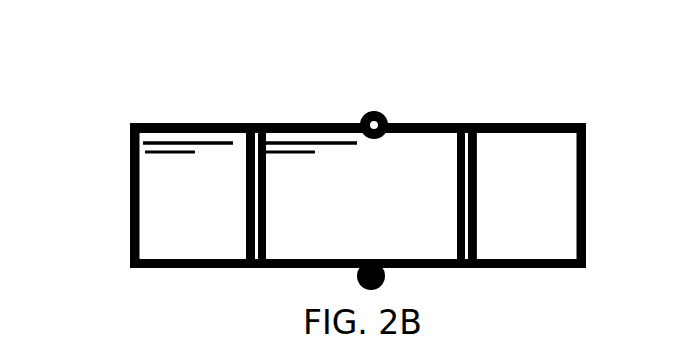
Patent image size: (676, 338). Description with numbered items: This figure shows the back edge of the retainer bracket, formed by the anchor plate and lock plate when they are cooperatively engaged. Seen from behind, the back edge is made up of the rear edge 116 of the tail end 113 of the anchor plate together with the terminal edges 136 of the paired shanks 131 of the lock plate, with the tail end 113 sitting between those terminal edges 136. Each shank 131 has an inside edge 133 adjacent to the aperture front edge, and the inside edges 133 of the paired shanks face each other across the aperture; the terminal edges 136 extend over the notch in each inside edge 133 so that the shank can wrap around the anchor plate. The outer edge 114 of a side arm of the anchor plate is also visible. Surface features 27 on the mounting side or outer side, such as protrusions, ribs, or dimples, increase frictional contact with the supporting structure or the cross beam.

The surface features 27 is at (363, 117).
The tail end 113 is at (292, 125).
The outer edge 114 is at (458, 168).
The rear edge 116 is at (367, 202).
The shank 131 is at (178, 210).
The inside edge 133 is at (247, 223).
The terminal edge 136 is at (175, 175).